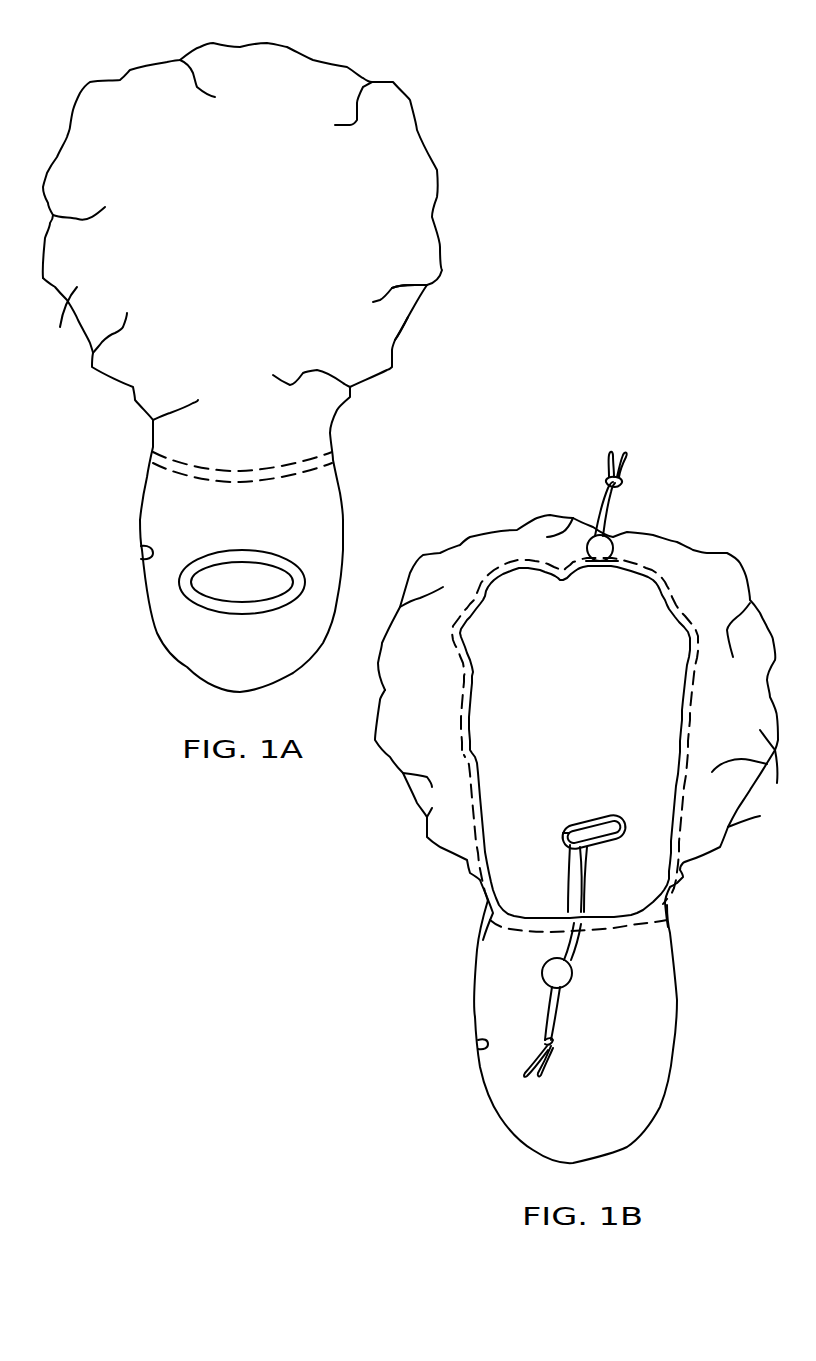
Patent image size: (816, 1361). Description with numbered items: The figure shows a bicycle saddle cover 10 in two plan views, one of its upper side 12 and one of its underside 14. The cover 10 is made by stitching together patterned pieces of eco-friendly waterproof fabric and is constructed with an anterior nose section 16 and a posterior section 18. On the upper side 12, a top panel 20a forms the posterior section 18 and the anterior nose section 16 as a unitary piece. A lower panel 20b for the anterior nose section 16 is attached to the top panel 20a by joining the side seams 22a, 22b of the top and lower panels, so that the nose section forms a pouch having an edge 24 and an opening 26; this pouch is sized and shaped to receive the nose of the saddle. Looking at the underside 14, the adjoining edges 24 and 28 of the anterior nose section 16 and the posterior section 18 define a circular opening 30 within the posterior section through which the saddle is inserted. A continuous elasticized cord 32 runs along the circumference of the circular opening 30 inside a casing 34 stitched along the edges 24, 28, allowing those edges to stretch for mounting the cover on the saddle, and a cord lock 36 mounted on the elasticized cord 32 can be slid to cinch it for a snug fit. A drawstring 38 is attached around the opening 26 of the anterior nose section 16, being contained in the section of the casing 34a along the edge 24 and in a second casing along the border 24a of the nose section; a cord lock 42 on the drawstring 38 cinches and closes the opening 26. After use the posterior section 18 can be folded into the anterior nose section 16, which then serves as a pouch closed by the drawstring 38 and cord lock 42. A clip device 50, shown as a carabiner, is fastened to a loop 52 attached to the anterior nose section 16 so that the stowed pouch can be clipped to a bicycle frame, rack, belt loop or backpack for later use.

In FIG. 1A, the cover 10 is at (492, 115).
In FIG. 1A, the upper side 12 is at (430, 251).
In FIG. 1B, the underside 14 is at (750, 640).
In FIG. 1A, the anterior nose section 16 is at (325, 500).
In FIG. 1B, the anterior nose section 16 is at (658, 1010).
In FIG. 1A, the posterior section 18 is at (387, 328).
In FIG. 1B, the posterior section 18 is at (748, 772).
In FIG. 1A, the top panel 20a is at (59, 324).
In FIG. 1B, the top panel 20a is at (425, 815).
In FIG. 1B, the lower panel 20b is at (485, 1000).
In FIG. 1A, the side seam 22a is at (141, 558).
In FIG. 1B, the side seam 22b is at (478, 1049).
In FIG. 1B, the edge 24 is at (627, 907).
In FIG. 1A, the border 24a is at (163, 470).
In FIG. 1B, the opening 26 is at (520, 905).
In FIG. 1B, the edge 28 is at (695, 812).
In FIG. 1B, the circular opening 30 is at (637, 607).
In FIG. 1B, the elasticized cord 32 is at (602, 512).
In FIG. 1B, the casing 34 is at (472, 700).
In FIG. 1B, the casing section 34a is at (597, 932).
In FIG. 1B, the cord lock 36 is at (612, 551).
In FIG. 1B, the drawstring 38 is at (556, 1038).
In FIG. 1B, the cord lock 42 is at (545, 970).
In FIG. 1B, the clip device 50 is at (622, 818).
In FIG. 1B, the loop 52 is at (577, 883).